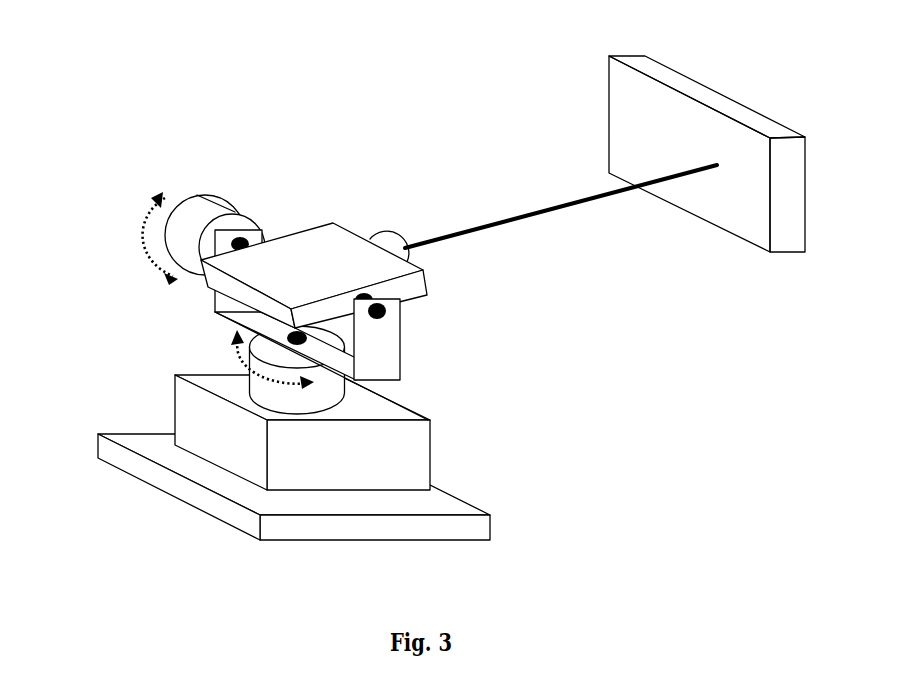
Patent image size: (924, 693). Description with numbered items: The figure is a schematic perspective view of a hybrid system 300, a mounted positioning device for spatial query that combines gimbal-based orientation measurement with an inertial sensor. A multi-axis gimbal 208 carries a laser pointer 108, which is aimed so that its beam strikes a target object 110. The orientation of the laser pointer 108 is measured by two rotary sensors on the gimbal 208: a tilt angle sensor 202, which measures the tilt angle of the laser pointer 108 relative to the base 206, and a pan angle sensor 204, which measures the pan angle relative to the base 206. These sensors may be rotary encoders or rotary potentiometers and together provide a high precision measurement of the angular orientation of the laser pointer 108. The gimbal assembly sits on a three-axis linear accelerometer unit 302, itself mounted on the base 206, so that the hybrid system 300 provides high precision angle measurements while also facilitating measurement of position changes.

The hybrid system 300 is at (70, 41).
The tilt angle sensor 202 is at (198, 205).
The laser pointer 108 is at (343, 242).
The target object 110 is at (627, 108).
The pan angle sensor 204 is at (260, 390).
The multi-axis gimbal 208 is at (455, 323).
The 3-axis linear accelerometer unit 302 is at (423, 457).
The base 206 is at (487, 527).